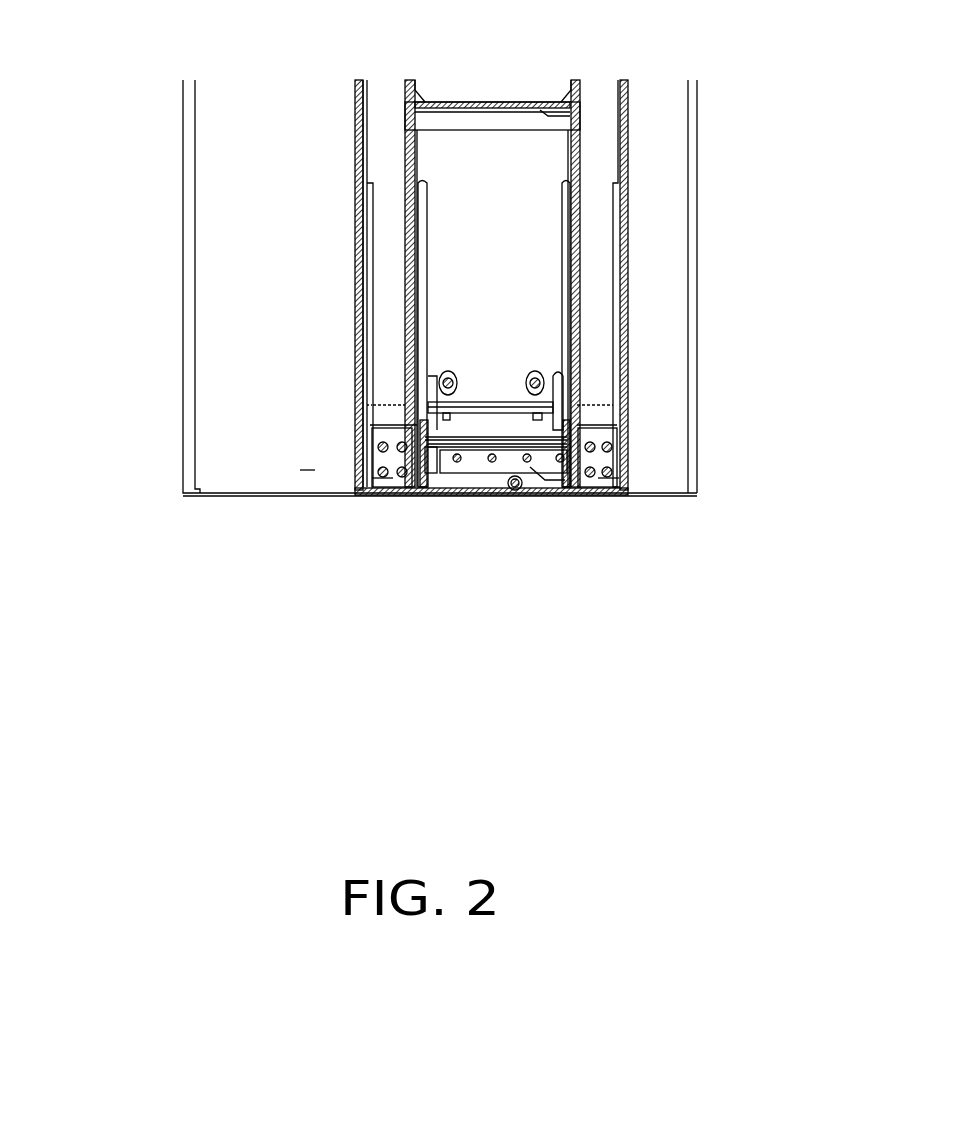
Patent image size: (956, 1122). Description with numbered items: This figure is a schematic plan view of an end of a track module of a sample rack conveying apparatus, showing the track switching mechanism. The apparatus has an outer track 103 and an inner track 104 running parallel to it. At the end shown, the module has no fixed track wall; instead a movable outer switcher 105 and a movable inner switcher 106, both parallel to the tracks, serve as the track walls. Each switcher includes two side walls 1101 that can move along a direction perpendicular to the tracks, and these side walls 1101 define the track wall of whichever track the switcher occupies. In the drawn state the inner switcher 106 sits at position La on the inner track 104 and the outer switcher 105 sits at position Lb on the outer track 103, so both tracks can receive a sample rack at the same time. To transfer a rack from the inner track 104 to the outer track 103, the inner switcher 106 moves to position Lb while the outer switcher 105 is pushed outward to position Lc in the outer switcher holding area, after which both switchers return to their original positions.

The outer track 103 is at (385, 141).
The inner track 104 is at (598, 158).
The outer switcher 105 is at (370, 330).
The inner switcher 106 is at (620, 322).
The side walls 1101 is at (619, 242).
The position La is at (600, 460).
The position Lb is at (393, 458).
The position Lc is at (315, 447).